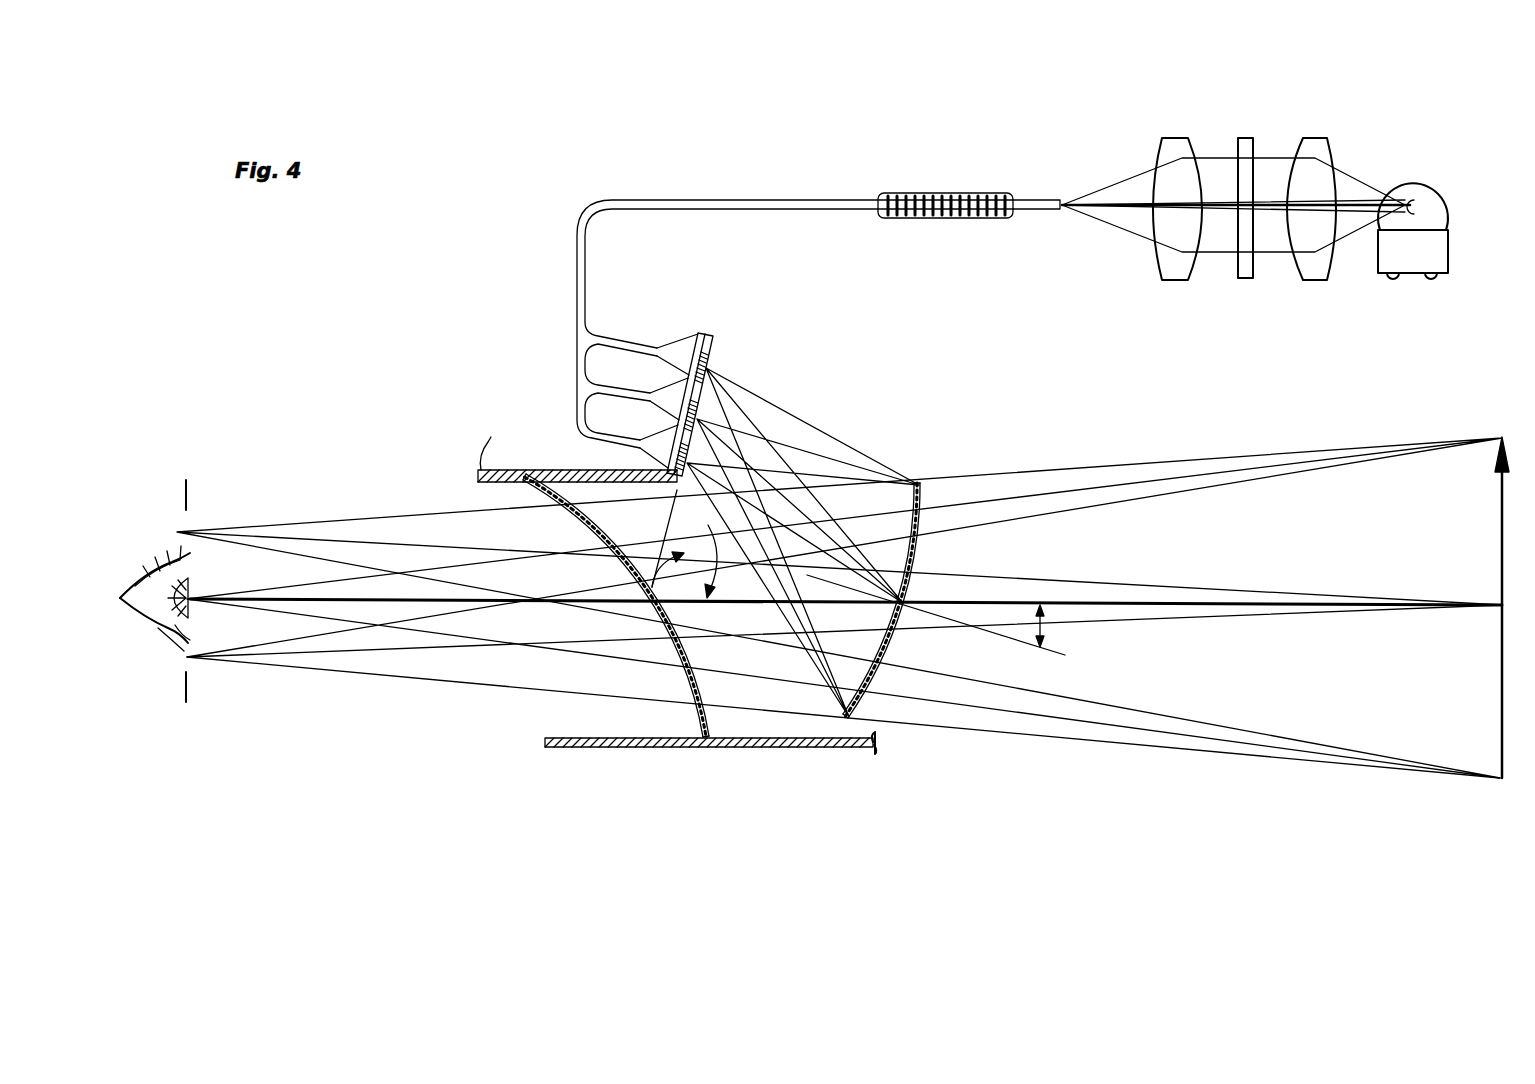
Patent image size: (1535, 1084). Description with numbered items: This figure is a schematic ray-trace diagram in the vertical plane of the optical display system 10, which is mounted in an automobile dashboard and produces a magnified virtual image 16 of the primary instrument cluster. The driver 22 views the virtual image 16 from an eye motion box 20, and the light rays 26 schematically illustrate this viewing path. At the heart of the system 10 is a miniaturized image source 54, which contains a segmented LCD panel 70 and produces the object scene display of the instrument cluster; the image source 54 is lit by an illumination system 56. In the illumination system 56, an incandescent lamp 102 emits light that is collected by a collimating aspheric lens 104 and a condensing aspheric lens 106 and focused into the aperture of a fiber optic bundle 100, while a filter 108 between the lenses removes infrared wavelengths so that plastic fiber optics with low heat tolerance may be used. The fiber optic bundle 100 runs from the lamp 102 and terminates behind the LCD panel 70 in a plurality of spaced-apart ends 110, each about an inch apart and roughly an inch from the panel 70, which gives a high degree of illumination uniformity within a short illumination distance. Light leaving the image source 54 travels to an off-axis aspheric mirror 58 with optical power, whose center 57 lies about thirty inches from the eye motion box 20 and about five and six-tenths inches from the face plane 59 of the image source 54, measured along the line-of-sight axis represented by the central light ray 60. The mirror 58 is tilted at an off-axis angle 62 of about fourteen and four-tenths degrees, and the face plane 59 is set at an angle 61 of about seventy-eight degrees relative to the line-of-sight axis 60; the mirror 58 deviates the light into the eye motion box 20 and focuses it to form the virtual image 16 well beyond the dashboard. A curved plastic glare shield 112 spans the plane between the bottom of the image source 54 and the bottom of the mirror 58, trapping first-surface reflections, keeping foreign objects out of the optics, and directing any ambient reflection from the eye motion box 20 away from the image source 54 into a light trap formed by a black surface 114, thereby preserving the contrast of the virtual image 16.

The optical display system 10 is at (452, 331).
The virtual image 16 is at (1502, 519).
The eye motion box 20 is at (190, 487).
The driver 22 is at (165, 632).
The light rays 26 is at (393, 677).
The image source 54 is at (677, 322).
The illumination system 56 is at (1083, 273).
The center of the aspheric mirror 57 is at (908, 600).
The off-axis aspheric mirror 58 is at (897, 645).
The face plane of the image source 59 is at (664, 522).
The central light ray 60 is at (1112, 602).
The angle of the face plane 61 is at (684, 554).
The off-axis angle 62 is at (1045, 632).
The segmented LCD panel 70 is at (712, 338).
The fiber optic bundle 100 is at (975, 193).
The incandescent lamp 102 is at (1432, 181).
The collimating aspheric lens 104 is at (1323, 138).
The condensing aspheric lens 106 is at (1164, 138).
The filter 108 is at (1243, 280).
The spaced-apart ends 110 is at (650, 441).
The glare shield 112 is at (697, 718).
The black surface 114 is at (606, 738).